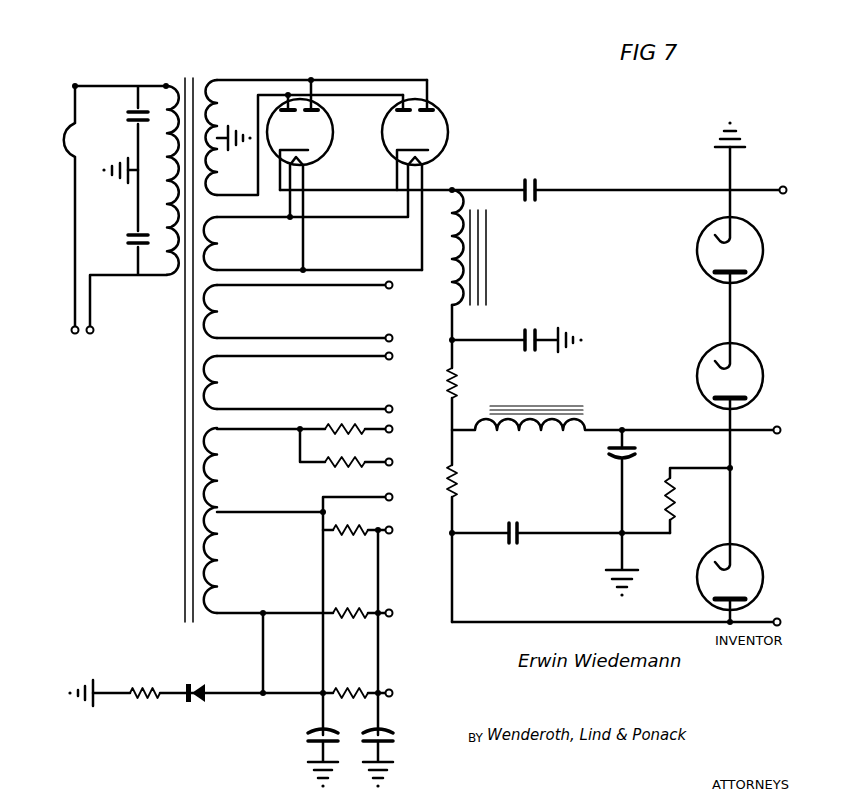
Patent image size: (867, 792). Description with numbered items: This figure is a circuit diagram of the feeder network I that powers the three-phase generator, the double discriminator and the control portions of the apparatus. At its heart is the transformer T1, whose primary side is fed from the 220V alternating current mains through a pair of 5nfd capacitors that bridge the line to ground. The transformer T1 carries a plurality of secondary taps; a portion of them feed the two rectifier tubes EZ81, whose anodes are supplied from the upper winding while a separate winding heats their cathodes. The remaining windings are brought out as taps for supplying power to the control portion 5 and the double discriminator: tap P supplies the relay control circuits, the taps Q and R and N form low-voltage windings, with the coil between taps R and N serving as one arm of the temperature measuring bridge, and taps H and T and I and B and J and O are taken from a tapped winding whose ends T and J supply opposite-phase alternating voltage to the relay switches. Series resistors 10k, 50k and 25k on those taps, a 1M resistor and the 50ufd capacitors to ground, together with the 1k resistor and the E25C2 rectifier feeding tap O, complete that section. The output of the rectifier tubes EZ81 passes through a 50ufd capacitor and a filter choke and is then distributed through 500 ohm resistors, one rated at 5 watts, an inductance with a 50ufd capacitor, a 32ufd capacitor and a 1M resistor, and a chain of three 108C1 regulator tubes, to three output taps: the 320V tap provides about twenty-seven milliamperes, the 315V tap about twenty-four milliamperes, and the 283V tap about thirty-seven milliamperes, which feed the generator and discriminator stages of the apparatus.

The transformer T1 is at (158, 334).
The 5 nF line filter capacitors 5nfd is at (119, 169).
The 220 V AC mains terminals 220V is at (88, 343).
The rectifier tubes EZ81 is at (347, 175).
The tap P is at (313, 288).
The terminal Q is at (314, 341).
The tap R is at (313, 357).
The tap N is at (314, 412).
The terminal H is at (314, 432).
The tap T is at (355, 451).
The feeder network I is at (311, 613).
The terminal B is at (366, 630).
The tap J is at (311, 650).
The terminal O is at (252, 695).
The 10 kohm resistor 10k is at (345, 423).
The 50 kohm resistors 50k is at (346, 531).
The 25 kohm resistor 25k is at (355, 522).
The 1 Mohm resistors 1M is at (533, 581).
The 1 kohm resistor 1k is at (114, 689).
The E25C2 rectifier diode E25C2 is at (202, 685).
The 50 uF filter capacitors 50ufd is at (468, 472).
The 32 uF capacitor 32ufd is at (559, 544).
The 500 ohm resistors 500 is at (472, 406).
The control portion 5 is at (461, 481).
The 108C1 voltage regulator tubes 108C1 is at (751, 373).
The 320 v. tap 320V is at (779, 182).
The 315 v. tap 315V is at (791, 422).
The 283 v. tap 283V is at (628, 610).